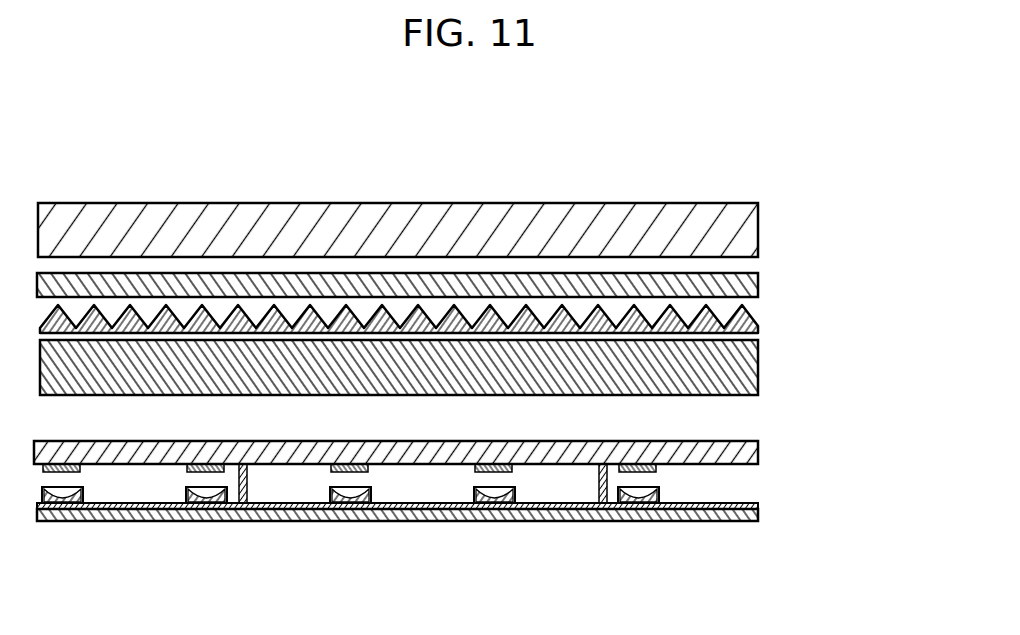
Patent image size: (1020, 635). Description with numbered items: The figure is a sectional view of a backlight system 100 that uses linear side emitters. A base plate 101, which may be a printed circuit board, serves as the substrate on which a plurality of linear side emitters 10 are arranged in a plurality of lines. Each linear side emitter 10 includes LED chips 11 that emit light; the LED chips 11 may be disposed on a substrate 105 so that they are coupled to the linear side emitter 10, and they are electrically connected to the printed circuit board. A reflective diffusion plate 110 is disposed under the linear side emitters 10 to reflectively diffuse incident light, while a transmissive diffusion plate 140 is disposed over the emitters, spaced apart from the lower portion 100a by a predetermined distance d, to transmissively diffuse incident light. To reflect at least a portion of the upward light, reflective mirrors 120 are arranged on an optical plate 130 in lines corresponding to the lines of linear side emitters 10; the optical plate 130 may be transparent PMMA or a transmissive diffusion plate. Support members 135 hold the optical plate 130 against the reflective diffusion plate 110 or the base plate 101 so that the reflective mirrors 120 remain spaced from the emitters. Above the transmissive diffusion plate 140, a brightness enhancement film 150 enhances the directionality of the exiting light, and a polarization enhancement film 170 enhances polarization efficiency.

The backlight system 100 is at (797, 162).
The lower portion 100a is at (863, 441).
The base plate 101 is at (758, 518).
The substrate 105 is at (362, 506).
The linear side emitter 10 is at (350, 541).
The LED chip 11 is at (350, 506).
The reflective diffusion plate 110 is at (758, 505).
The reflective mirror 120 is at (656, 470).
The optical plate 130 is at (727, 450).
The support member 135 is at (243, 505).
The transmissive diffusion plate 140 is at (758, 363).
The brightness enhancement film 150 is at (770, 272).
The polarization enhancement film 170 is at (758, 229).
The predetermined distance d is at (760, 395).